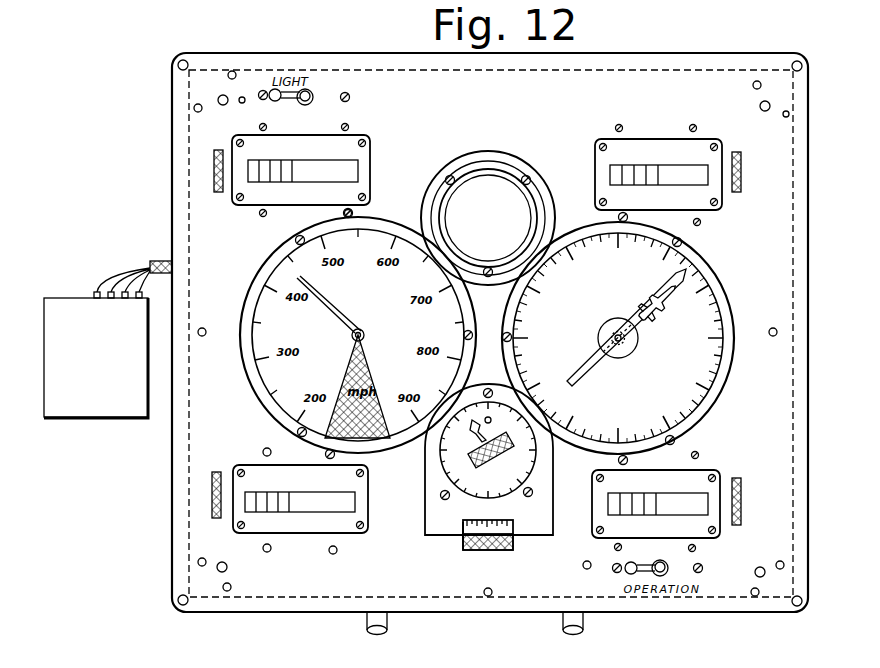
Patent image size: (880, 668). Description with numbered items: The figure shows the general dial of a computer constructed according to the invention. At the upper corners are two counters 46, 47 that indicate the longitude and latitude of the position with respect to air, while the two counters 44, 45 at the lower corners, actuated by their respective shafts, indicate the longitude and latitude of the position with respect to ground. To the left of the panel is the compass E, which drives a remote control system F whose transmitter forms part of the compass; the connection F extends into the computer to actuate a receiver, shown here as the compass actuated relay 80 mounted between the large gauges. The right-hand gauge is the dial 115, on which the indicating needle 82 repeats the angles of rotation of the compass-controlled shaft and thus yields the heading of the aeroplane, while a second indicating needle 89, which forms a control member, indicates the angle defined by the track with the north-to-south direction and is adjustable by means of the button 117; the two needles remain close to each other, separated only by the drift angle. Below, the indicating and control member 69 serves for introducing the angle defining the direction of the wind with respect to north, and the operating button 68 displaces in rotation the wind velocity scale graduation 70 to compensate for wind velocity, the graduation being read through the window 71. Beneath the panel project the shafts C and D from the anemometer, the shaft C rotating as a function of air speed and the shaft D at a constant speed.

The longitude counter 44 is at (235, 520).
The latitude counter 45 is at (713, 507).
The longitude air counter 46 is at (240, 188).
The latitude air counter 47 is at (713, 195).
The operating button 68 is at (477, 551).
The indicating and control member 69 is at (473, 428).
The wind velocity scale graduation 70 is at (462, 493).
The wind indicator window 71 is at (463, 534).
The compass actuated relay 80 is at (500, 192).
The indicating needle 82 is at (667, 310).
The indicating needle 89 is at (673, 273).
The dial 115 is at (697, 362).
The button 117 is at (625, 352).
The shaft C is at (367, 624).
The shaft D is at (583, 625).
The compass E is at (65, 408).
The remote control system F is at (152, 262).